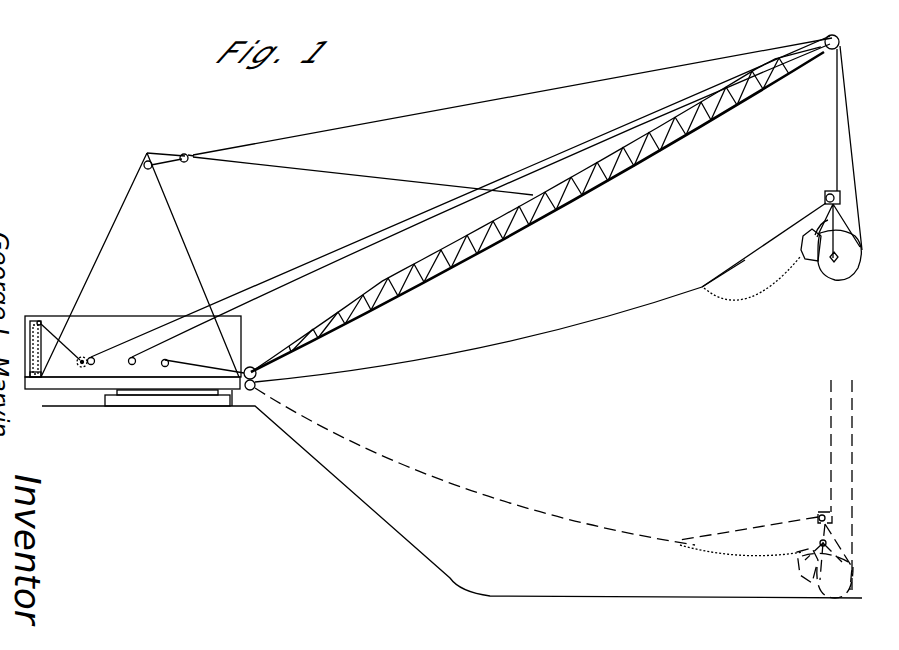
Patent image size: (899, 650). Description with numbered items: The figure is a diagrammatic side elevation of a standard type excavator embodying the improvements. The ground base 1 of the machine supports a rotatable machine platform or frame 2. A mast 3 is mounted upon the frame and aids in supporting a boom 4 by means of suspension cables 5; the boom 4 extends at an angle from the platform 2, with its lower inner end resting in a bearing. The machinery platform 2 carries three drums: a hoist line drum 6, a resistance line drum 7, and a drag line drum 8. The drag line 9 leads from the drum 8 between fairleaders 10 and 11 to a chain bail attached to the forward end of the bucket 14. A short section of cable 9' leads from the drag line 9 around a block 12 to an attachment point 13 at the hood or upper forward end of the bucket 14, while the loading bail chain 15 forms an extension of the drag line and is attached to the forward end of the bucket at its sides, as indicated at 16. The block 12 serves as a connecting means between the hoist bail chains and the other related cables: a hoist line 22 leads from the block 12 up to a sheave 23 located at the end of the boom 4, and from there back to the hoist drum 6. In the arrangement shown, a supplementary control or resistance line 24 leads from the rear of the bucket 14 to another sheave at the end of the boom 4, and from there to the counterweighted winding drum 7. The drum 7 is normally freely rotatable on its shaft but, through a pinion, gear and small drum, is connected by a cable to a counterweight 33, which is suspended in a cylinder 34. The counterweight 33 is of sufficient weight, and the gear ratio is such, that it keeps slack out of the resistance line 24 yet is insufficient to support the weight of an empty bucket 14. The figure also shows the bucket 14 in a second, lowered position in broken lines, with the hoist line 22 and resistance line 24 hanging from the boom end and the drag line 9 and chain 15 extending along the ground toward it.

The ground base 1 is at (118, 399).
The machine platform 2 is at (193, 392).
The mast 3 is at (183, 239).
The boom 4 is at (692, 134).
The suspension cables 5 is at (343, 171).
The hoist line drum 6 is at (128, 361).
The resistance line drum 7 is at (90, 357).
The drag line drum 8 is at (161, 364).
The drag line 9 is at (478, 416).
The short section of cable 9' is at (727, 264).
The fairleader 10 is at (251, 367).
The fairleader 11 is at (256, 385).
The block 12 is at (824, 195).
The attachment point 13 is at (795, 226).
The bucket 14 is at (853, 277).
The loading bail chain 15 is at (783, 296).
The attachment of loading bail chain 16 is at (803, 241).
The hoist line 22 is at (414, 229).
The sheave 23 is at (829, 50).
The resistance line 24 is at (277, 276).
The counterweight 33 is at (46, 321).
The cylinder 34 is at (41, 380).